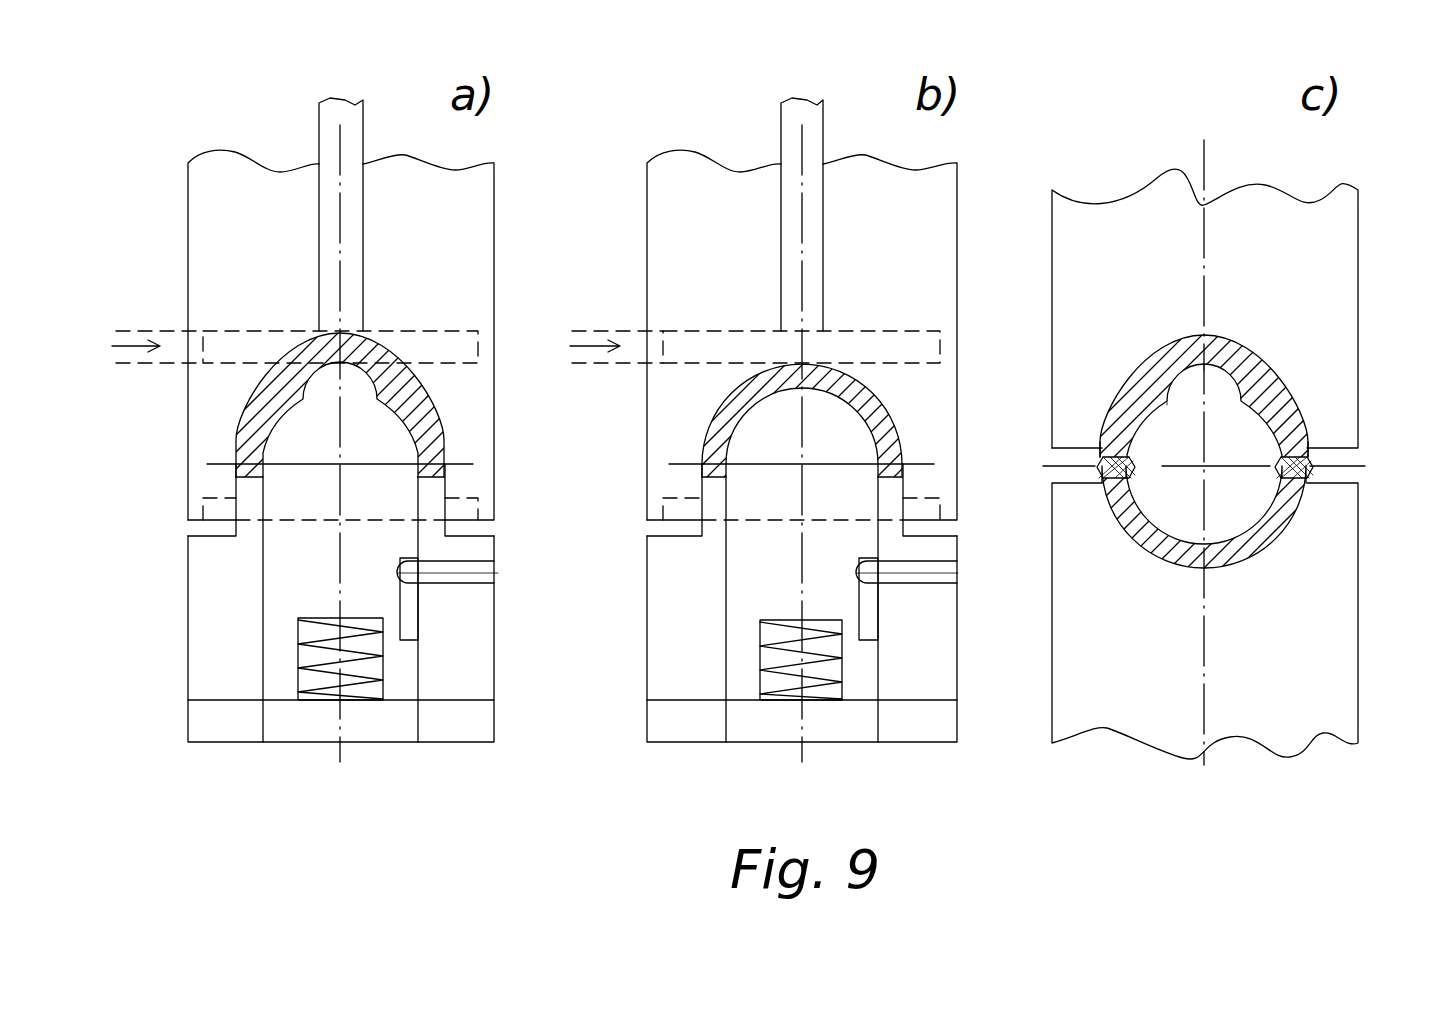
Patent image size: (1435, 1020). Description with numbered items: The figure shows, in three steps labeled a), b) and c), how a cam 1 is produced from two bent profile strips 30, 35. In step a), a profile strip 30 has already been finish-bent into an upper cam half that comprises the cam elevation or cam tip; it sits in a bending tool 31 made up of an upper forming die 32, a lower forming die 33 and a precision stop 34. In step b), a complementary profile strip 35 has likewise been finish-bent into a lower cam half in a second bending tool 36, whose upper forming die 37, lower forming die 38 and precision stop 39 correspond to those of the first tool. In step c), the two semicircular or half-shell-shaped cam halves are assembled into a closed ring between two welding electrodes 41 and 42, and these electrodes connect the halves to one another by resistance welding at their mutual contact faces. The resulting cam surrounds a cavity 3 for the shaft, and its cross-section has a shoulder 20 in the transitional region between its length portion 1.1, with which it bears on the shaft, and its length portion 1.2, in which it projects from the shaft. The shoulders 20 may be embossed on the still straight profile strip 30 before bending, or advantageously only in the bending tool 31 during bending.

The cam 1 is at (1142, 320).
The length portion 1.1 is at (1140, 547).
The length portion 1.2 is at (1218, 423).
The cavity 3 is at (1213, 390).
The shoulder 20 is at (1170, 397).
The profile strip 30 is at (265, 405).
The bending tool 31 is at (172, 250).
The upper forming die 32 is at (450, 235).
The lower forming die 33 is at (283, 677).
The precision stop 34 is at (222, 637).
The profile strip 35 is at (720, 428).
The bending tool 36 is at (986, 196).
The upper forming die 37 is at (925, 405).
The lower forming die 38 is at (748, 678).
The precision stop 39 is at (676, 626).
The welding electrode 41 is at (1328, 260).
The welding electrode 42 is at (1330, 640).